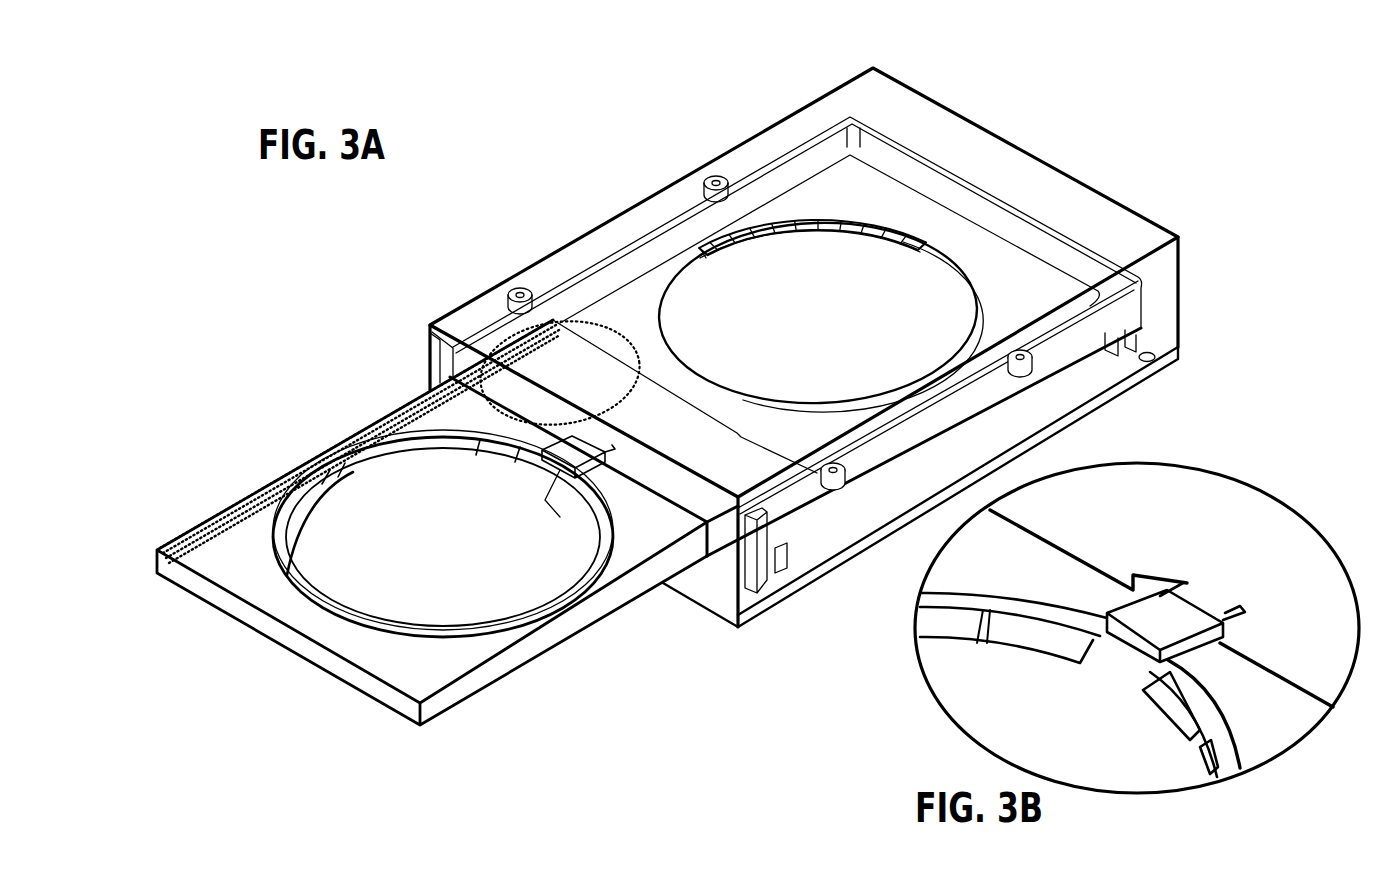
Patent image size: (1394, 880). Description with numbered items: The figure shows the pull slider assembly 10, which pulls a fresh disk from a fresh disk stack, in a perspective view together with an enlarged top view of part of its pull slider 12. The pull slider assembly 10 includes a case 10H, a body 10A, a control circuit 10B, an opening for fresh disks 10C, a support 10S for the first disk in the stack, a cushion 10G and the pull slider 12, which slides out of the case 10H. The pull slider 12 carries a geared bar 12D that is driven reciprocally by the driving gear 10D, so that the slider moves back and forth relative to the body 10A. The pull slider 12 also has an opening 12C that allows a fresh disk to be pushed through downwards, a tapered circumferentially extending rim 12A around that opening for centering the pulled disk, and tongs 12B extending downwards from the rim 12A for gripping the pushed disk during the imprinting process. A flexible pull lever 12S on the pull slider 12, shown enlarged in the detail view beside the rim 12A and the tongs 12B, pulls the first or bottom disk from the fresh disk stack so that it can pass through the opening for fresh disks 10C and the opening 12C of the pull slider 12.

In FIG. 3A, the pull slider assembly 10 is at (1244, 238).
In FIG. 3A, the body 10A is at (973, 197).
In FIG. 3A, the control circuit 10B is at (1177, 338).
In FIG. 3A, the opening for fresh disks 10C is at (873, 333).
In FIG. 3A, the driving gear 10D is at (617, 360).
In FIG. 3A, the cushion 10G is at (790, 230).
In FIG. 3A, the case 10H is at (880, 84).
In FIG. 3A, the support 10S is at (707, 254).
In FIG. 3A, the pull slider 12 is at (210, 553).
In FIG. 3B, the pull slider 12 is at (1280, 717).
In FIG. 3A, the tapered circumferentially extending rim 12A is at (287, 503).
In FIG. 3B, the tapered circumferentially extending rim 12A is at (1227, 767).
In FIG. 3A, the tongs 12B is at (346, 463).
In FIG. 3B, the tongs 12B is at (1170, 710).
In FIG. 3A, the opening 12C is at (387, 487).
In FIG. 3B, the opening 12C is at (1033, 713).
In FIG. 3A, the geared bar 12D is at (417, 400).
In FIG. 3A, the flexible pull lever 12S is at (555, 445).
In FIG. 3B, the flexible pull lever 12S is at (1157, 617).